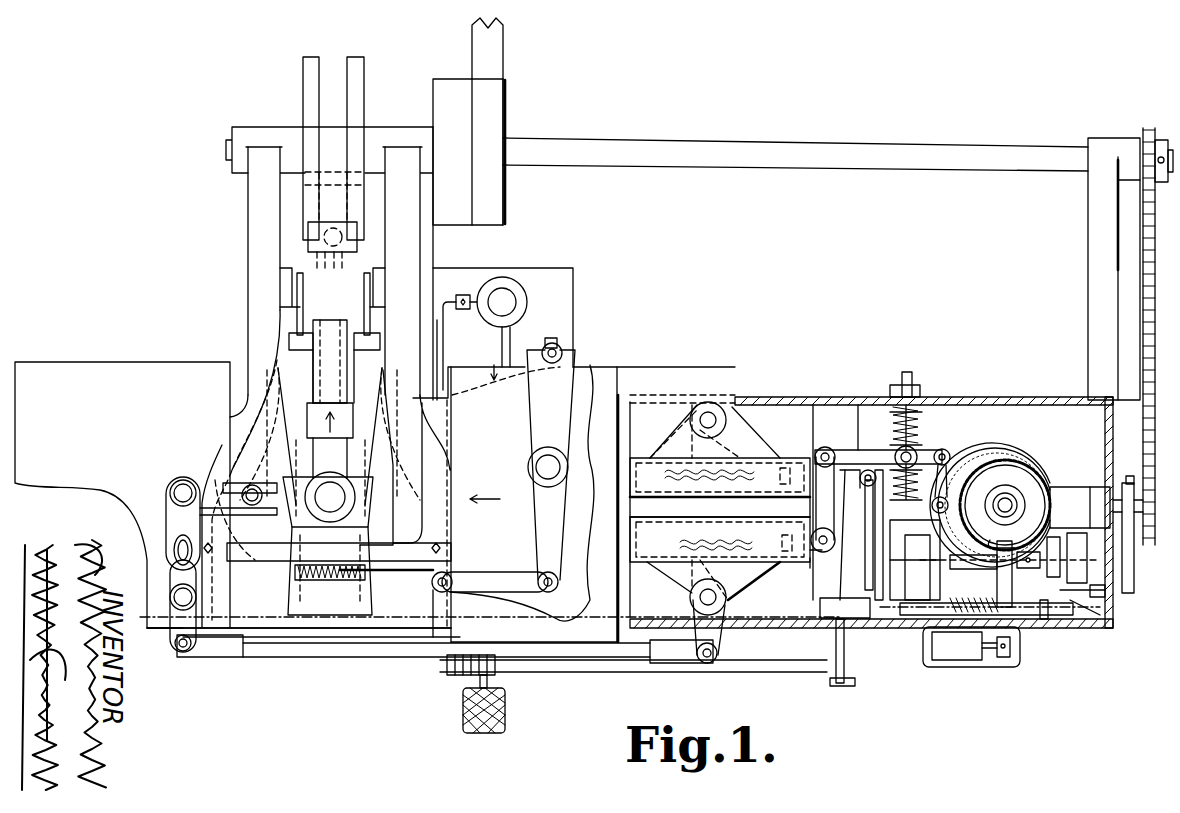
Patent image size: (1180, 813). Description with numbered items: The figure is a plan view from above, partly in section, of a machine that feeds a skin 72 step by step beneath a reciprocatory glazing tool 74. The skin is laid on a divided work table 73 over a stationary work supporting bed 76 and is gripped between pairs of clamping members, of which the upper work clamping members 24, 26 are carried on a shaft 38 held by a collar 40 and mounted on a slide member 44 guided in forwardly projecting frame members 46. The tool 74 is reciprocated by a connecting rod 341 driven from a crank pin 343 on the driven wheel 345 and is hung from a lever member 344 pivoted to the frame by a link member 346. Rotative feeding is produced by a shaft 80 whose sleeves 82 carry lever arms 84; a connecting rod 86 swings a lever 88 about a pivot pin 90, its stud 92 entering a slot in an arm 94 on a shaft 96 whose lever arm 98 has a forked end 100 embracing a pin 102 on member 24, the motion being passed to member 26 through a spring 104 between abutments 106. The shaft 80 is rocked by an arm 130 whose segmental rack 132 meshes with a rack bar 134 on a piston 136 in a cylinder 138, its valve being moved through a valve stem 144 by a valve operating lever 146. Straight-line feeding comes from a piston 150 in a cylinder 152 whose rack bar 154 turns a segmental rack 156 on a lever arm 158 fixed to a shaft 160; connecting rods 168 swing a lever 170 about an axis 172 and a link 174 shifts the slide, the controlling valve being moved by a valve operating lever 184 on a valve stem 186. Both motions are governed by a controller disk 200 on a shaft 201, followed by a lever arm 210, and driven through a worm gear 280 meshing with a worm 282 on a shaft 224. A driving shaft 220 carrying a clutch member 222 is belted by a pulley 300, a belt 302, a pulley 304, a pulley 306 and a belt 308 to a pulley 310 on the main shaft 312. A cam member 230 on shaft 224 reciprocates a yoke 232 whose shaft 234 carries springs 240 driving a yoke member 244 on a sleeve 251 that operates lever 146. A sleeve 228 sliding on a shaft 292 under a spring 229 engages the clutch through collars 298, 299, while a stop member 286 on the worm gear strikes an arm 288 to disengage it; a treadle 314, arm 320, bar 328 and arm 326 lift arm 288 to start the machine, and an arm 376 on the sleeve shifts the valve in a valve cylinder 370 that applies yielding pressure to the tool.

The work clamping member 24 is at (270, 435).
The work clamping member 26 is at (395, 437).
The shaft 38 is at (360, 505).
The collar 40 is at (345, 497).
The slide member 44 is at (403, 628).
The frame members 46 is at (419, 245).
The skin 72 is at (572, 600).
The work table 73 is at (133, 368).
The glazing tool 74 is at (330, 405).
The work supporting bed 76 is at (345, 455).
The shaft 80 is at (727, 598).
The sleeves 82 is at (688, 590).
The lever arm 84 is at (716, 652).
The connecting rod 86 is at (546, 652).
The lever 88 is at (176, 643).
The pivot pin 90 is at (175, 595).
The stud 92 is at (175, 545).
The arm 94 is at (175, 495).
The shaft 96 is at (180, 488).
The lever arm 98 is at (215, 480).
The forked end 100 is at (276, 483).
The pin 102 is at (252, 485).
The spring 104 is at (345, 560).
The abutments 106 is at (297, 575).
The arm 130 is at (722, 565).
The segmental rack 132 is at (680, 543).
The rack bar 134 is at (745, 537).
The piston 136 is at (801, 568).
The cylinder 138 is at (808, 553).
The valve stem 144 is at (837, 542).
The valve operating lever 146 is at (835, 538).
The piston 150 is at (865, 518).
The cylinder 152 is at (641, 458).
The rack bar 154 is at (740, 472).
The segmental rack 156 is at (680, 468).
The lever arm 158 is at (722, 440).
The shaft 160 is at (726, 420).
The connecting rod 168 is at (637, 348).
The lever 170 is at (535, 416).
The axis 172 is at (548, 467).
The link 174 is at (496, 575).
The valve operating lever 184 is at (860, 480).
The valve stem 186 is at (835, 537).
The controller disk 200 is at (1027, 455).
The shaft 201 is at (1012, 505).
The lever arm 210 is at (948, 492).
The driving shaft 220 is at (1132, 572).
The clutch member 222 is at (1102, 612).
The shaft 224 is at (973, 569).
The sleeve 228 is at (1060, 610).
The spring 229 is at (964, 646).
The cam member 230 is at (885, 550).
The yoke 232 is at (895, 588).
The shaft 234 is at (907, 372).
The springs 240 is at (936, 437).
The yoke member 244 is at (835, 455).
The sleeve 251 is at (822, 452).
The worm gear 280 is at (1042, 470).
The worm 282 is at (1015, 580).
The stop member 286 is at (1005, 538).
The arm 288 is at (1000, 592).
The shaft 292 is at (1085, 610).
The collar 298 is at (1044, 620).
The collar 299 is at (1085, 625).
The pulley 300 is at (1110, 597).
The belt 302 is at (1128, 548).
The pulley 304 is at (1130, 477).
The pulley 306 is at (1105, 520).
The belt 308 is at (1140, 360).
The pulley 310 is at (1143, 128).
The main shaft 312 is at (670, 140).
The treadle 314 is at (462, 720).
The arm 320 is at (455, 676).
The arm 326 is at (835, 647).
The bar 328 is at (610, 665).
The connecting rod 341 is at (330, 208).
The crank pin 343 is at (300, 180).
The lever member 344 is at (289, 344).
The driven wheel 345 is at (356, 57).
The link member 346 is at (298, 318).
The valve cylinder 370 is at (945, 665).
The arm 376 is at (1003, 657).